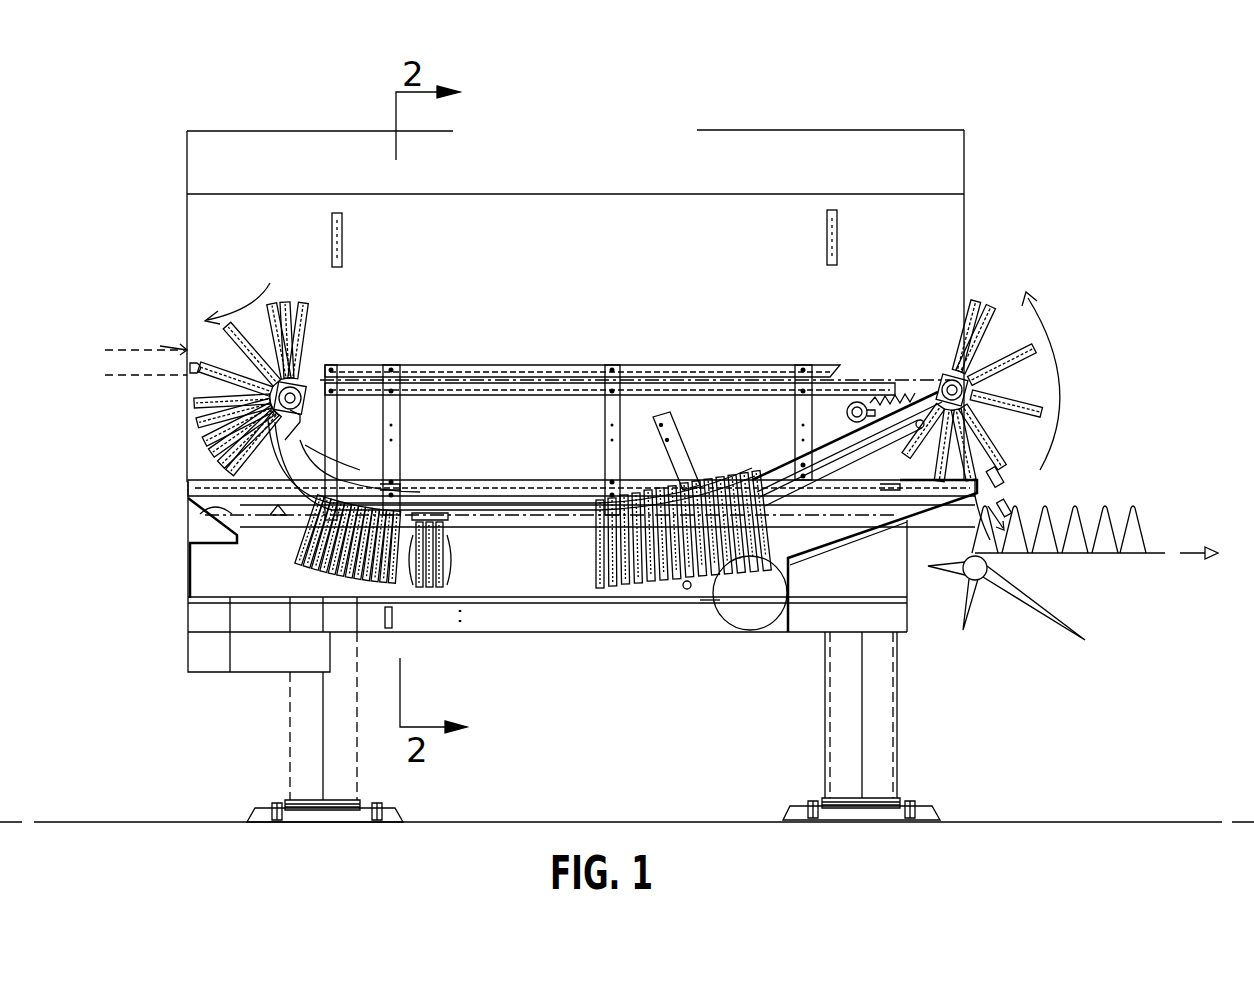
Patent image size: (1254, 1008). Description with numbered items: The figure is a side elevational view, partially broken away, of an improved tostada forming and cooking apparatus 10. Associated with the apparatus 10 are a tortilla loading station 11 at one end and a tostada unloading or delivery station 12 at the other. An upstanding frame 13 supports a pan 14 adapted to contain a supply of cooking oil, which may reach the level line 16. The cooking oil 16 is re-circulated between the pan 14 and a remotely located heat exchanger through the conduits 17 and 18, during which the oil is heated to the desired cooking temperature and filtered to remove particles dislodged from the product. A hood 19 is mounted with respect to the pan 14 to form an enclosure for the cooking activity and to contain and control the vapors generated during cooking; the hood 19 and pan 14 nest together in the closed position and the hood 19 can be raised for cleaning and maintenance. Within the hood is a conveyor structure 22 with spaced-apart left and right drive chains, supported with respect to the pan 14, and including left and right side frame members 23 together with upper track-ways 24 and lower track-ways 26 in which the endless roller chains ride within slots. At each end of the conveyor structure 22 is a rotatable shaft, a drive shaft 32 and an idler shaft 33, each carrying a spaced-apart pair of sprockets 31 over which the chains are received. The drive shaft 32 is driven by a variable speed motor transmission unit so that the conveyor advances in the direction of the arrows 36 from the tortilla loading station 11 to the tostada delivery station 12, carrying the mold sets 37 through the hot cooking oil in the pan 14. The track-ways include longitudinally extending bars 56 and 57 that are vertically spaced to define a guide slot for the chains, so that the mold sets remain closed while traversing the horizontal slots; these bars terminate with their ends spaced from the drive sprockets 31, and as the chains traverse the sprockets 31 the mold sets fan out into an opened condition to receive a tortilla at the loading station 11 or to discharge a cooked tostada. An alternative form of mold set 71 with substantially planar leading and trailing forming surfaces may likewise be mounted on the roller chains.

The tostada forming and cooking apparatus 10 is at (988, 205).
The tortilla loading station 11 is at (155, 357).
The tostada unloading or delivery station 12 is at (1140, 540).
The upstanding frame 13 is at (290, 718).
The pan 14 is at (195, 568).
The level line of cooking oil 16 is at (188, 530).
The conduit 17 is at (688, 592).
The conduit 18 is at (785, 620).
The hood 19 is at (965, 145).
The conveyor structure 22 is at (520, 368).
The side frame member 23 is at (400, 446).
The upper track-way 24 is at (432, 368).
The lower track-way 26 is at (725, 468).
The sprocket 31 is at (300, 380).
The drive shaft 32 is at (310, 400).
The idler shaft 33 is at (938, 360).
The arrows 36 is at (270, 283).
The mold set 37 is at (455, 560).
The longitudinally extending bar 56 is at (780, 368).
The longitudinally extending bar 57 is at (742, 388).
The mold set 71 is at (320, 317).